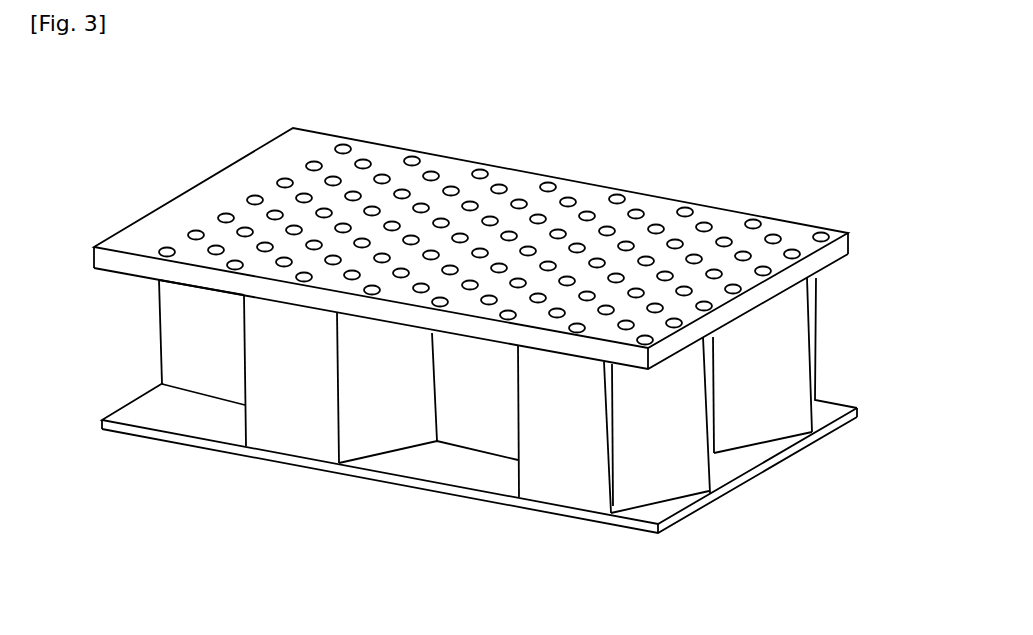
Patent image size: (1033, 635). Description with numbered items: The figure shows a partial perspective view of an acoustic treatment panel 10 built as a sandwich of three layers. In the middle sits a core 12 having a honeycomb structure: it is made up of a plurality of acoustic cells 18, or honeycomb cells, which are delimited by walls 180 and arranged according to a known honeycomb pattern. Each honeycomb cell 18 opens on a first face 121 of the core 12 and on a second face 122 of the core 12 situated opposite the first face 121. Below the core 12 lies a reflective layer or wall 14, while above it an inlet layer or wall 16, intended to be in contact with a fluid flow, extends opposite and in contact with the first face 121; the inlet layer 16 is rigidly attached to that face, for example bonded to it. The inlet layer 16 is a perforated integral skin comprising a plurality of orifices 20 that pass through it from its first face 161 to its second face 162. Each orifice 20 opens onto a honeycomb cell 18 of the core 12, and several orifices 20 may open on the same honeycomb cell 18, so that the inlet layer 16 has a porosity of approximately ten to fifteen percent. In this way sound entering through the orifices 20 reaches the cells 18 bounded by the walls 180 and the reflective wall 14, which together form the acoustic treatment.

The acoustic treatment panel 10 is at (875, 206).
The core 12 is at (170, 338).
The first face of the core 121 is at (154, 285).
The second face of the core 122 is at (151, 383).
The reflective layer or wall 14 is at (452, 501).
The inlet layer or wall 16 is at (570, 174).
The first face of the inlet layer 161 is at (245, 174).
The second face of the inlet layer 162 is at (779, 300).
The acoustic cell 18 is at (660, 473).
The wall 180 is at (372, 382).
The orifice 20 is at (729, 236).